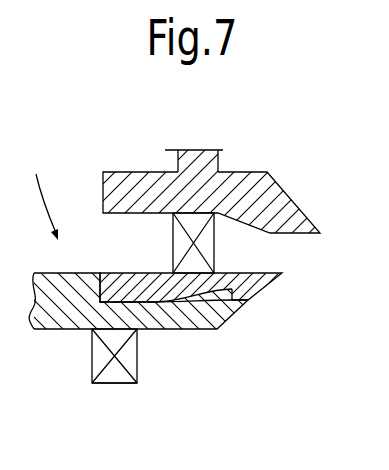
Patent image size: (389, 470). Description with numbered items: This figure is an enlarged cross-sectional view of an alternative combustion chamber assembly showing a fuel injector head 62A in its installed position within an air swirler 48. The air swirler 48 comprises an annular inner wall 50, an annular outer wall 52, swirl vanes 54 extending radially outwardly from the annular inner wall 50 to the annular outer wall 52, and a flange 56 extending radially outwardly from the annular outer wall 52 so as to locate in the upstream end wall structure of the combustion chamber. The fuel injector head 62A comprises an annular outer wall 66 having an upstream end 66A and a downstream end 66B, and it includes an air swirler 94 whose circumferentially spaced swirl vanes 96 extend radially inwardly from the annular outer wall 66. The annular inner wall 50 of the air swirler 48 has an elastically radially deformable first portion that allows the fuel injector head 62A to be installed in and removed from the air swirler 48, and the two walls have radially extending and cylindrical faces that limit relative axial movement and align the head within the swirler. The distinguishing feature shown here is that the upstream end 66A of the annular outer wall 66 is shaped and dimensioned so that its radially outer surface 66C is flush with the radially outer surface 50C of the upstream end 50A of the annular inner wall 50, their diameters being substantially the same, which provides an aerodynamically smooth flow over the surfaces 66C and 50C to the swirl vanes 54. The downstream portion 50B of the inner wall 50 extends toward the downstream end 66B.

The air swirler 48 is at (264, 147).
The annular outer wall 52 is at (268, 196).
The flange 56 is at (202, 158).
The swirl vanes 54 is at (190, 222).
The fuel injector head 62A is at (34, 193).
The annular inner wall 50 is at (225, 282).
The upstream end 50A is at (112, 280).
The radially outer surface 50C is at (148, 272).
The thin end portion of terminal plate 50B is at (273, 280).
The annular outer wall 66 is at (197, 310).
The upstream end 66A is at (78, 308).
The downstream end 66B is at (227, 307).
The radially outer surface 66C is at (48, 271).
The swirl vanes 96 is at (128, 357).
The air swirler 94 is at (113, 387).